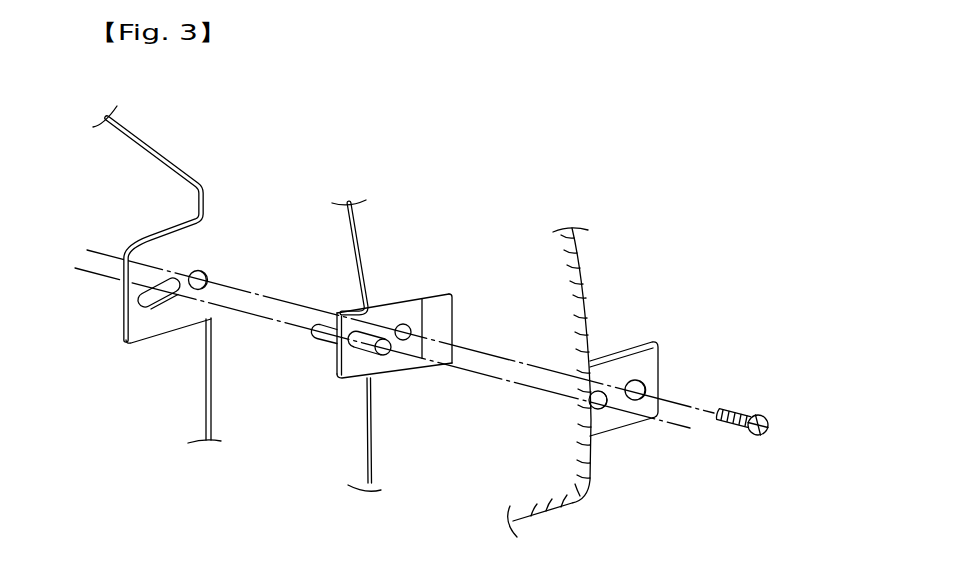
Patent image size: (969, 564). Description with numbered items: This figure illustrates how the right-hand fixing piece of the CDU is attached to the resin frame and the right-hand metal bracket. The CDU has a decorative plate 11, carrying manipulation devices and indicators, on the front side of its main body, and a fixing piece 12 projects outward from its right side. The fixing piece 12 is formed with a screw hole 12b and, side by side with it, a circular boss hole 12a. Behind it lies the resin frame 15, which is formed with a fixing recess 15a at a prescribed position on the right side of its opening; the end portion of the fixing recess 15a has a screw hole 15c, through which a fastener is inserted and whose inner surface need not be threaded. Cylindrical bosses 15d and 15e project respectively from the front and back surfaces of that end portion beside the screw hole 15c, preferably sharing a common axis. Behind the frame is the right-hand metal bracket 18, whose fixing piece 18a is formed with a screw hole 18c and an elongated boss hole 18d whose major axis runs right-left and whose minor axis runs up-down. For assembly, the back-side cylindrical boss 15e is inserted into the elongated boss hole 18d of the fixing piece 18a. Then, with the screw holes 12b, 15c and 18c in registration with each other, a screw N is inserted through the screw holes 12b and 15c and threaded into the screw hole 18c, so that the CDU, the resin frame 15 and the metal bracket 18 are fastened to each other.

The decorative plate 11 is at (587, 290).
The fixing piece 12 is at (647, 340).
The circular boss hole 12a is at (605, 409).
The screw hole 12b is at (643, 380).
The resin frame 15 is at (364, 260).
The fixing recess 15a is at (444, 290).
The screw hole 15c is at (411, 329).
The cylindrical boss 15d is at (370, 356).
The cylindrical boss 15e is at (320, 342).
The metal bracket 18 is at (138, 150).
The fixing piece 18a is at (160, 333).
The screw hole 18c is at (190, 274).
The elongated boss hole 18d is at (128, 311).
The screw N is at (763, 436).